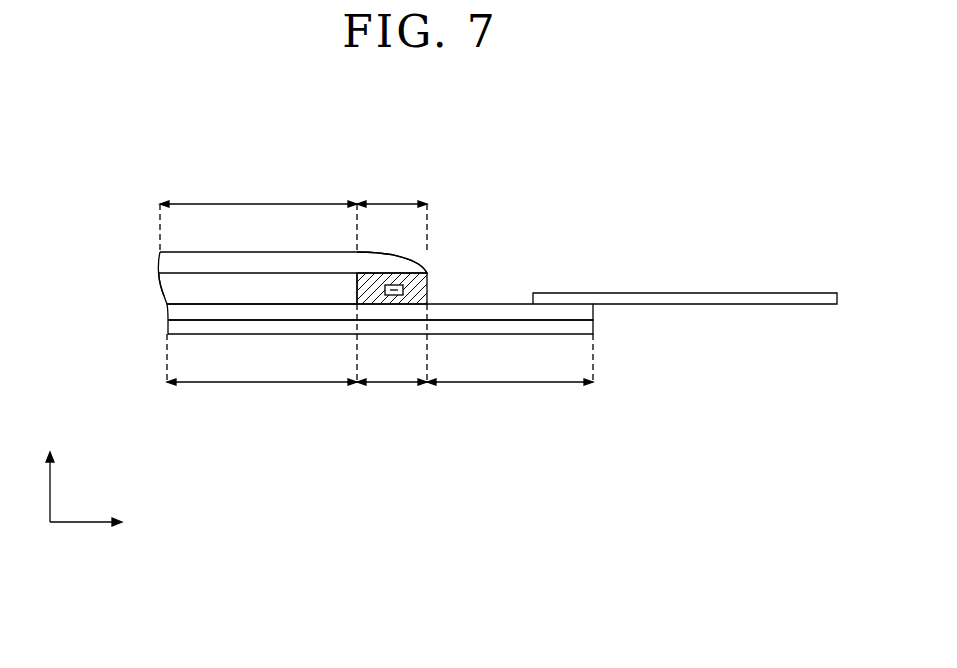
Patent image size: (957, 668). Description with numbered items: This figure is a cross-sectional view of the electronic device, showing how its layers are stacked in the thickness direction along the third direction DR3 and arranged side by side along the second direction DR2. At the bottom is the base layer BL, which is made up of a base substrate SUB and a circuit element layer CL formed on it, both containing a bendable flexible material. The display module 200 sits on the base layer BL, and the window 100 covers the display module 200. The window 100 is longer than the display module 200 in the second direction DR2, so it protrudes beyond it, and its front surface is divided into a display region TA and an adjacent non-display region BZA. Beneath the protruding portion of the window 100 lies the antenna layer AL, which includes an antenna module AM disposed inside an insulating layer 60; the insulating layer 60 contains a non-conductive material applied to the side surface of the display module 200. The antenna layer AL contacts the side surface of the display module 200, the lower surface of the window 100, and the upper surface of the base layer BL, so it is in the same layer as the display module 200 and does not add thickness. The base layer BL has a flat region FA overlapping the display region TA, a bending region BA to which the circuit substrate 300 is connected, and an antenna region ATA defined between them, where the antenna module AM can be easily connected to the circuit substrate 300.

The window 100 is at (175, 262).
The display module 200 is at (175, 287).
The circuit element layer CL is at (180, 312).
The base substrate SUB is at (178, 327).
The base layer BL is at (310, 327).
The antenna module AM is at (427, 273).
The insulating layer 60 is at (417, 300).
The antenna layer AL is at (455, 273).
The circuit substrate 300 is at (697, 300).
The display region TA is at (258, 192).
The non-display region BZA is at (392, 192).
The flat region FA is at (262, 395).
The antenna region ATA is at (392, 395).
The bending region BA is at (510, 395).
The second direction DR2 is at (110, 522).
The third direction DR3 is at (51, 474).